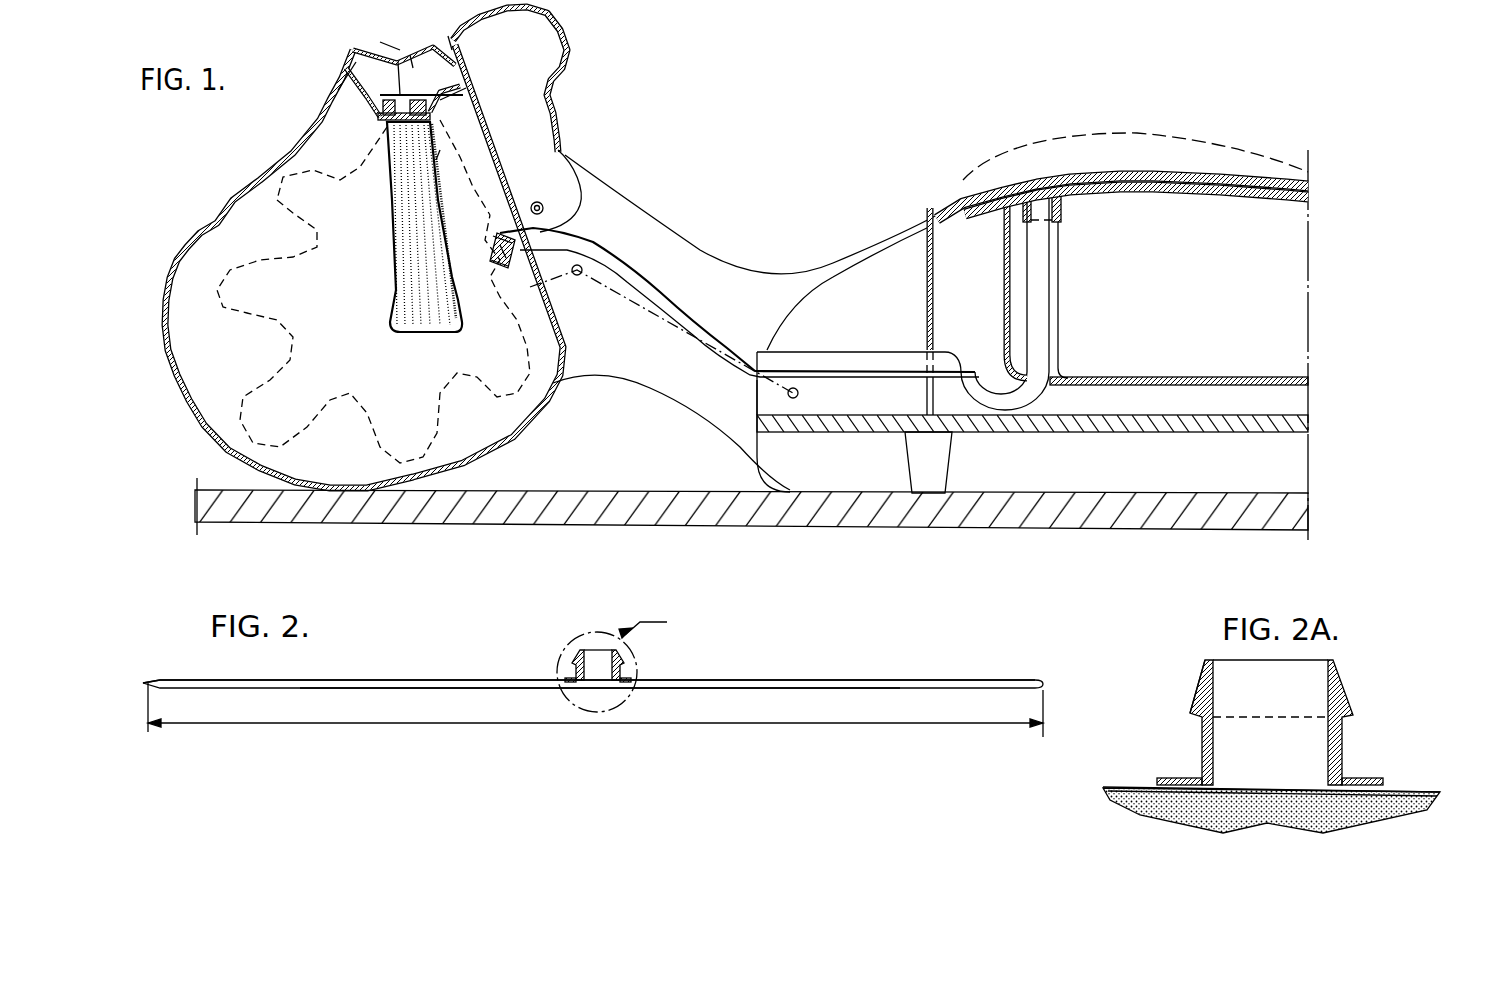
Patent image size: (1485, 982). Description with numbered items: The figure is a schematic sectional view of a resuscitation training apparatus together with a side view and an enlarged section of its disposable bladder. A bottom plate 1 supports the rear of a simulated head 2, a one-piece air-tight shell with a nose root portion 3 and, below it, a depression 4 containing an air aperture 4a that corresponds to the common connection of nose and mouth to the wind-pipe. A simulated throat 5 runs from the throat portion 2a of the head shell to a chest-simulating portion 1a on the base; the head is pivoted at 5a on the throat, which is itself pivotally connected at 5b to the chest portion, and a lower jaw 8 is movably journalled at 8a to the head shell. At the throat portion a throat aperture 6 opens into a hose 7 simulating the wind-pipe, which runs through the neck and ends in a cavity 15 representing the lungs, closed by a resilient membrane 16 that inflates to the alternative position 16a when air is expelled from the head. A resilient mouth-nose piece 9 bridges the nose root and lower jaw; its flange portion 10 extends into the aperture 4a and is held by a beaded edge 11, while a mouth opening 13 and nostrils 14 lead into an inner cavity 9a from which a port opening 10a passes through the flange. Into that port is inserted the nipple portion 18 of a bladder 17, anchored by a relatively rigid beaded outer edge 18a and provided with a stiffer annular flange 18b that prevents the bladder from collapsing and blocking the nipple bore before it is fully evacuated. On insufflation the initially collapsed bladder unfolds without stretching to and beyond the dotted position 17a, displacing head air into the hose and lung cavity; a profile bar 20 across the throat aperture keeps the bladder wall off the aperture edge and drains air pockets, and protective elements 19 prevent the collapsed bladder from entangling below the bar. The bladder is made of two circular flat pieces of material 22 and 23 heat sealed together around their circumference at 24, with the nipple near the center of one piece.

In FIG. 1, the bottom plate 1 is at (607, 491).
In FIG. 1, the chest-simulating portion 1a is at (890, 240).
In FIG. 1, the simulated head 2 is at (268, 162).
In FIG. 1, the throat portion 2a is at (500, 222).
In FIG. 1, the nose root portion 3 is at (346, 80).
In FIG. 1, the depression 4 is at (438, 155).
In FIG. 1, the air aperture 4a is at (385, 117).
In FIG. 1, the simulated throat 5 is at (707, 255).
In FIG. 1, the head pivot 5a is at (578, 278).
In FIG. 1, the throat pivot 5b is at (800, 394).
In FIG. 1, the throat aperture 6 is at (568, 232).
In FIG. 1, the hose 7 is at (638, 277).
In FIG. 1, the lower jaw 8 is at (568, 42).
In FIG. 1, the jaw journal 8a is at (537, 202).
In FIG. 1, the mouth-nose piece 9 is at (362, 47).
In FIG. 1, the inner cavity 9a is at (362, 65).
In FIG. 1, the flange portion 10 is at (405, 96).
In FIG. 1, the port opening 10a is at (413, 55).
In FIG. 1, the beaded edge 11 is at (436, 165).
In FIG. 1, the mouth opening 13 is at (452, 35).
In FIG. 1, the nostrils 14 is at (398, 40).
In FIG. 1, the cavity 15 is at (1105, 172).
In FIG. 1, the resilient membrane 16 is at (1035, 182).
In FIG. 1, the alternative membrane position 16a is at (1207, 146).
In FIG. 1, the bladder 17 is at (388, 303).
In FIG. 2, the bladder 17 is at (815, 680).
In FIG. 2A, the bladder 17 is at (1110, 797).
In FIG. 1, the alternative bladder position 17a is at (246, 318).
In FIG. 1, the nipple portion 18 is at (420, 95).
In FIG. 2, the nipple portion 18 is at (622, 672).
In FIG. 2A, the nipple portion 18 is at (1200, 745).
In FIG. 2A, the beaded outer edge 18a is at (1195, 715).
In FIG. 2A, the annular flange 18b is at (1430, 755).
In FIG. 1, the protective elements 19 is at (495, 238).
In FIG. 1, the profile bar 20 is at (503, 262).
In FIG. 2, the flat piece of material 22 is at (428, 678).
In FIG. 2A, the flat piece of material 22 is at (1418, 793).
In FIG. 2, the flat piece of material 23 is at (428, 689).
In FIG. 2, the heat seal 24 is at (148, 680).